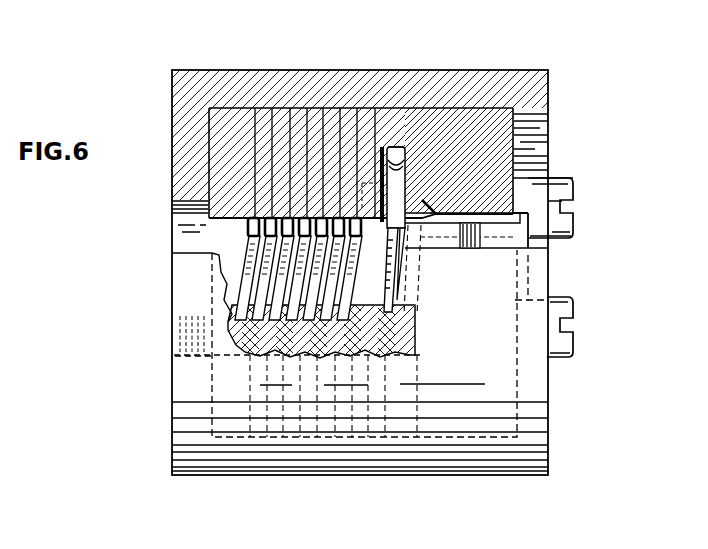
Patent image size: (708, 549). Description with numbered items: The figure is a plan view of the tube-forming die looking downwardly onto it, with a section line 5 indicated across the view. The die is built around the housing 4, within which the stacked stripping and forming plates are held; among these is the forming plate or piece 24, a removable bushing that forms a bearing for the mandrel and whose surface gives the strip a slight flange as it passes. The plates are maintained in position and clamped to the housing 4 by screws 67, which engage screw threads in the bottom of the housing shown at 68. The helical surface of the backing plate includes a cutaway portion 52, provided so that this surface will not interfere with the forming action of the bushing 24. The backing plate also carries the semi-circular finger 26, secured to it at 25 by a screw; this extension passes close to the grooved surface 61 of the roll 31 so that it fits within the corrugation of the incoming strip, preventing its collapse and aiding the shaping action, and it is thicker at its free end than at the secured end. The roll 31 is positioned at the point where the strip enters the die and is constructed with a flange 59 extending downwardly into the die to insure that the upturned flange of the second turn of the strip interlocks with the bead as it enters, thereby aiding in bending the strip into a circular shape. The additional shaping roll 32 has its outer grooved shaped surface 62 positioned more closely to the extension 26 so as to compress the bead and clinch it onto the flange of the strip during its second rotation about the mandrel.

The housing 4 is at (215, 478).
The section line 5- 5 is at (460, 62).
The forming plate or piece 24 is at (498, 218).
The securing point of finger 25 is at (488, 244).
The semi-circular finger 26 is at (398, 262).
The roll 31 is at (381, 172).
The additional shaping roll 32 is at (388, 356).
The cutaway portion 52 is at (433, 212).
The flange 59 is at (390, 165).
The grooved surface 61 is at (410, 152).
The outer grooved shaped surface 62 is at (322, 312).
The screws 67 is at (572, 232).
The screw threads 68 is at (215, 357).